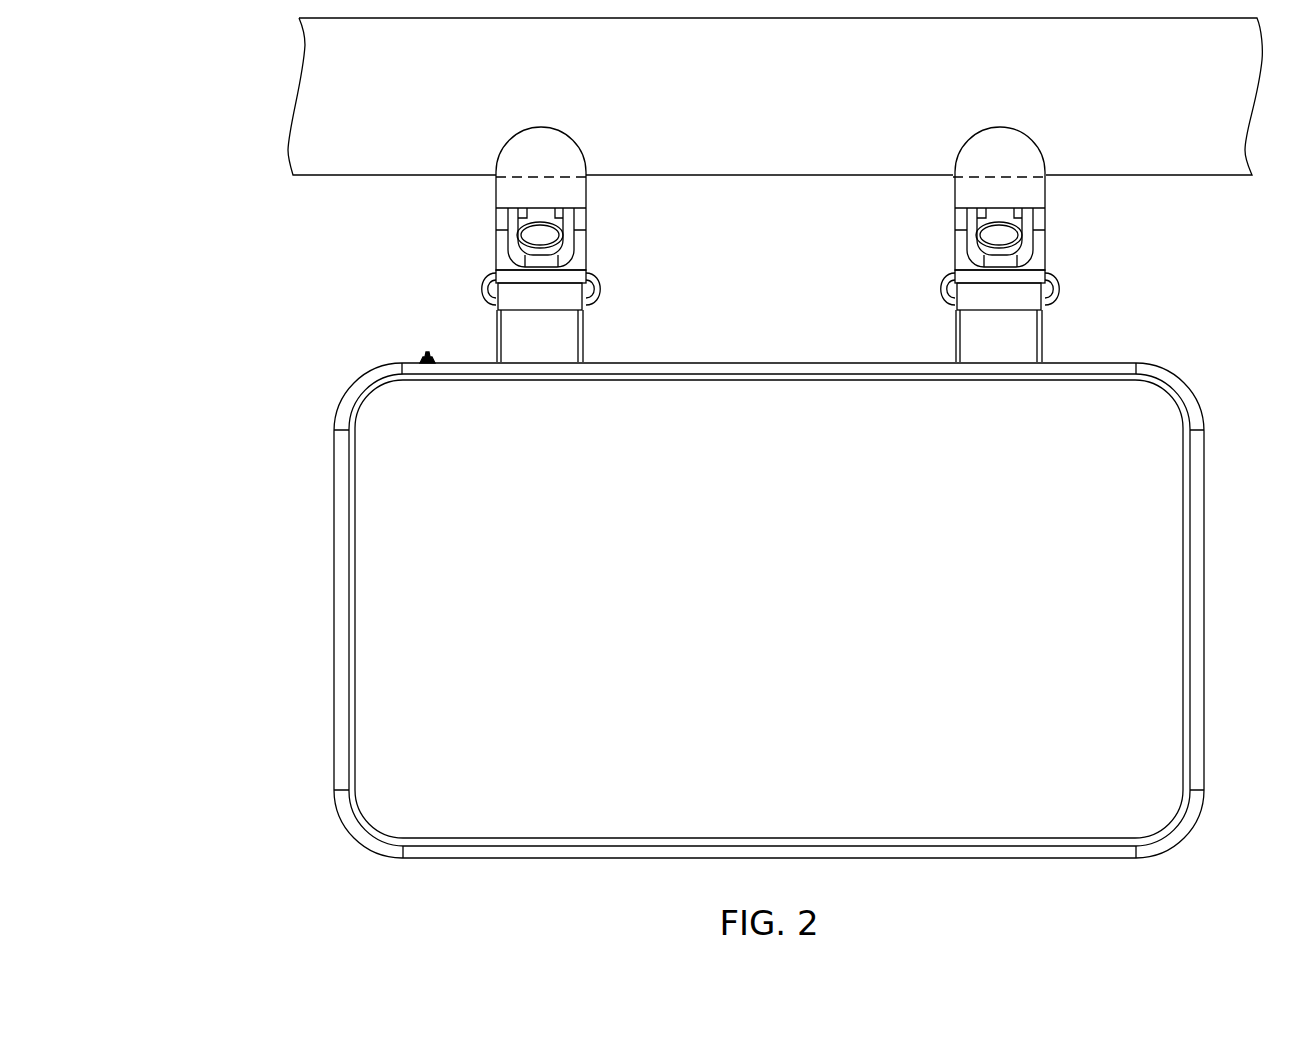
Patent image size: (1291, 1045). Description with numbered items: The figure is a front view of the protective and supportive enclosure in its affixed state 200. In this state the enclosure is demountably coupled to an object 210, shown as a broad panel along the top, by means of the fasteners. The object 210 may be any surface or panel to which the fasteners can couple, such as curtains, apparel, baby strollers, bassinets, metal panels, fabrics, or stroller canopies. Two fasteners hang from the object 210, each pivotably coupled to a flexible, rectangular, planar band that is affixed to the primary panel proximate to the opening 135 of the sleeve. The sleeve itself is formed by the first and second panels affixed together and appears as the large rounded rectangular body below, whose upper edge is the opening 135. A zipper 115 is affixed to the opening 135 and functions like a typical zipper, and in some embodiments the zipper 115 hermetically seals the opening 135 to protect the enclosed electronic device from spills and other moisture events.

The affixed state 200 is at (688, 512).
The object 210 is at (774, 108).
The opening 135 is at (767, 360).
The zipper 115 is at (427, 350).